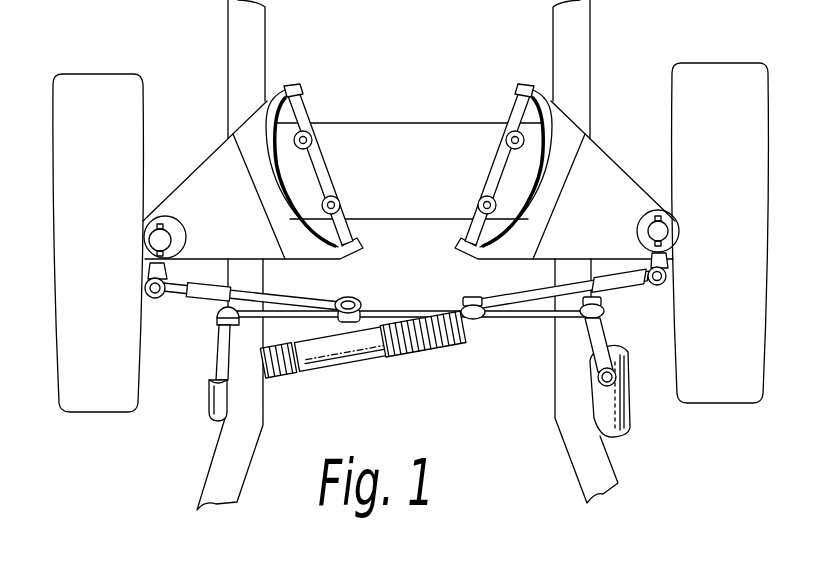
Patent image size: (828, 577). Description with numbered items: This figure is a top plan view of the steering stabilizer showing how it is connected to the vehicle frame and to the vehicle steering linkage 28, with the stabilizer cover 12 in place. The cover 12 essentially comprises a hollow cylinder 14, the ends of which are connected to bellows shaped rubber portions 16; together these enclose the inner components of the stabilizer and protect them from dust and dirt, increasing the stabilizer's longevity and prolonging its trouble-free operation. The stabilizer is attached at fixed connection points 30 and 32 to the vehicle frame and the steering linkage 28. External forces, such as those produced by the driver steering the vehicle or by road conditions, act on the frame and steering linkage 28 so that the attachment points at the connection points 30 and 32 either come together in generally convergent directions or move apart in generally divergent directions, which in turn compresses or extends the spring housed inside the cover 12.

The cover 12 is at (384, 368).
The hollow cylinder 14 is at (300, 368).
The bellows shaped rubber portions 16 is at (403, 353).
The vehicle steering linkage 28 is at (527, 319).
The fixed connection point 30 is at (213, 408).
The fixed connection point 32 is at (485, 320).